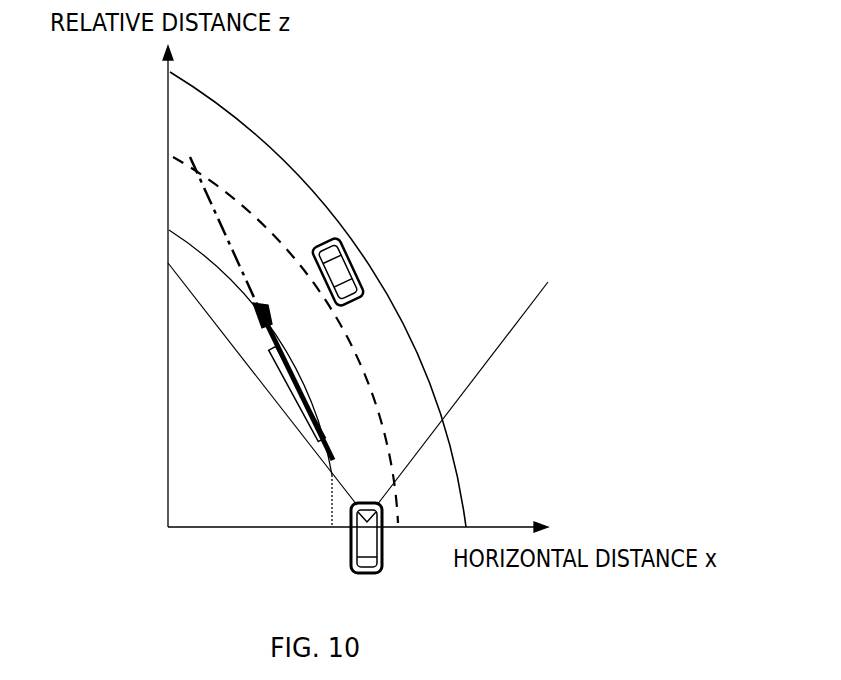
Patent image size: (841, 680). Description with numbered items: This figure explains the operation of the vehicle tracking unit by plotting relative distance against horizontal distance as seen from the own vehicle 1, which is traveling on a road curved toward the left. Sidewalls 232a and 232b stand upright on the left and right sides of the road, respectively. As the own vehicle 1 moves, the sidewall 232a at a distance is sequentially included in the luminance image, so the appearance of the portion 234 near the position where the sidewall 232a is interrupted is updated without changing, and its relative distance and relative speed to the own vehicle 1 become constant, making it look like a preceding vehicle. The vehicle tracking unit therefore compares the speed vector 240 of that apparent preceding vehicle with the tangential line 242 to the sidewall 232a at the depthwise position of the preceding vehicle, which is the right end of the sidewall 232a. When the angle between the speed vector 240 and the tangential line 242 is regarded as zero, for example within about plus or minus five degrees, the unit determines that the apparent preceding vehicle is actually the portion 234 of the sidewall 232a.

The own vehicle 1 is at (359, 575).
The sidewall 232a is at (315, 455).
The sidewall 232b is at (402, 317).
The portion 234 is at (284, 388).
The speed vector 240 is at (258, 330).
The tangential line 242 is at (237, 254).